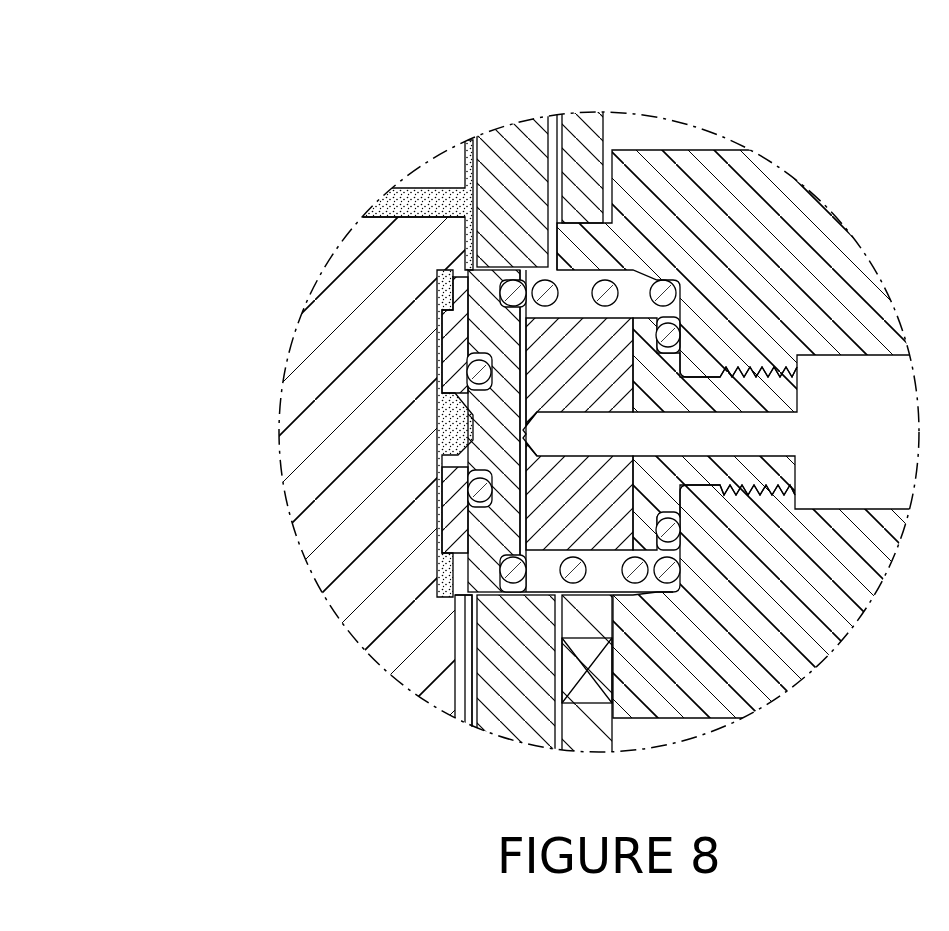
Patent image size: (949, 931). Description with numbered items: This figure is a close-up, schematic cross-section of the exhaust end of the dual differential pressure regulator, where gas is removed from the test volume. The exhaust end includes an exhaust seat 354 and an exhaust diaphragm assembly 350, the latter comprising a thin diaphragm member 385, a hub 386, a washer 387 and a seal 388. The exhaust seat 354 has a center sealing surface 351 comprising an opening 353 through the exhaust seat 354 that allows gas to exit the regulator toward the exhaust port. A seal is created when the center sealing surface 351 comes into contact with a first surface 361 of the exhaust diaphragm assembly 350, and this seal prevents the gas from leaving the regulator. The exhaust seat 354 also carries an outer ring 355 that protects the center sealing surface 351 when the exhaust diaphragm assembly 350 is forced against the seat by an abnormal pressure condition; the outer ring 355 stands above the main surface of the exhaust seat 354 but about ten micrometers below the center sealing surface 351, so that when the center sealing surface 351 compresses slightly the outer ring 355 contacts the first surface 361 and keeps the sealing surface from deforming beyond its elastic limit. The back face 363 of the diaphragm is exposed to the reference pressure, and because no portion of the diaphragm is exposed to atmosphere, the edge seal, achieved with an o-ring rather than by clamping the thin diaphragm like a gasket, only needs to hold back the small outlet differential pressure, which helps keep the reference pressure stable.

The exhaust diaphragm assembly 350 is at (543, 578).
The center sealing surface 351 is at (517, 307).
The opening 353 is at (527, 430).
The exhaust seat 354 is at (637, 327).
The outer ring 355 is at (522, 292).
The first surface 361 is at (470, 593).
The back face 363 is at (445, 492).
The thin diaphragm member 385 is at (509, 297).
The hub 386 is at (520, 290).
The washer 387 is at (445, 315).
The seal 388 is at (475, 358).